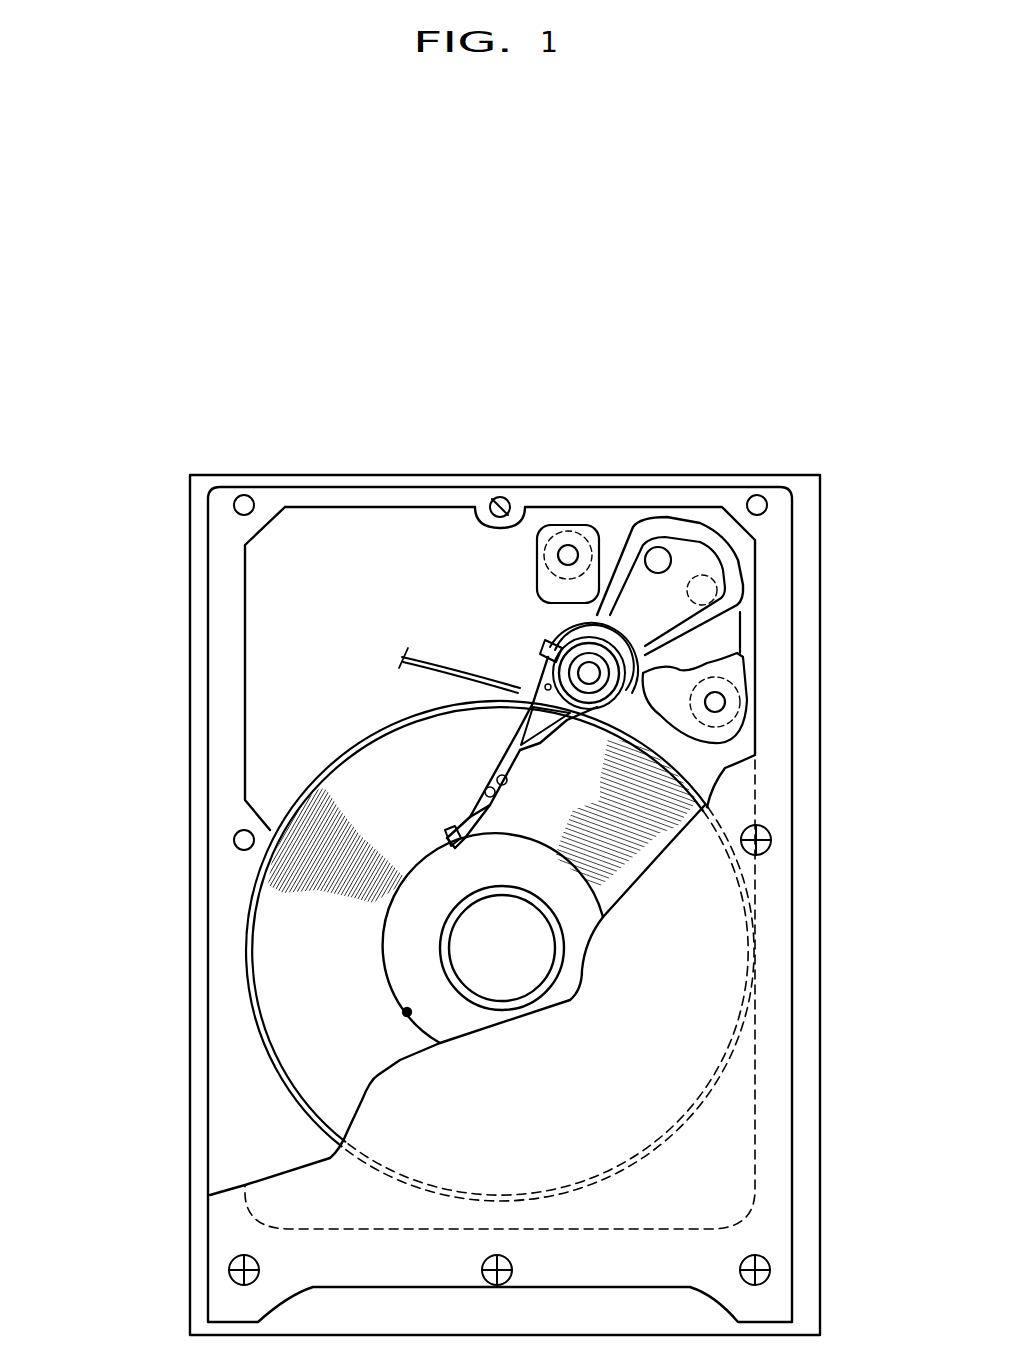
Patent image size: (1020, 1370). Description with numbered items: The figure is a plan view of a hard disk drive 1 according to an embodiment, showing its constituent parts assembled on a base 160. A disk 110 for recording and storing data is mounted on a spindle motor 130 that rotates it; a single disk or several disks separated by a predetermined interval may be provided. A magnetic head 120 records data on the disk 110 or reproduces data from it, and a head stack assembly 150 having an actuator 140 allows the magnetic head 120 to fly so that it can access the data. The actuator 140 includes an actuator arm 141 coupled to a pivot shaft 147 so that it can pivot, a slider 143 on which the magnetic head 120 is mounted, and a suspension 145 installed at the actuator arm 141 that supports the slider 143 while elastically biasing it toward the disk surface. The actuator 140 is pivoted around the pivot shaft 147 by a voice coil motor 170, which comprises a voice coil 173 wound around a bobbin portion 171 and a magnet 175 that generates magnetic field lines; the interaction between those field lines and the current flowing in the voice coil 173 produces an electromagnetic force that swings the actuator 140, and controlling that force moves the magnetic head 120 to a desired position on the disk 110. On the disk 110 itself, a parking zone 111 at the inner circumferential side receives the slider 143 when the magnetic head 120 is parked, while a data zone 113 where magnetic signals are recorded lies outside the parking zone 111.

The hard disk drive 1 is at (124, 343).
The disk 110 is at (288, 963).
The parking zone 111 is at (280, 1107).
The data zone 113 is at (365, 1025).
The magnetic head 120 is at (430, 827).
The spindle motor 130 is at (414, 1004).
The actuator 140 is at (464, 621).
The actuator arm 141 is at (520, 680).
The slider 143 is at (445, 837).
The suspension 145 is at (458, 832).
The pivot shaft 147 is at (556, 640).
The head stack assembly 150 is at (630, 722).
The base 160 is at (233, 598).
The voice coil motor 170 is at (644, 525).
The bobbin portion 171 is at (682, 537).
The voice coil 173 is at (633, 527).
The magnet 175 is at (590, 590).